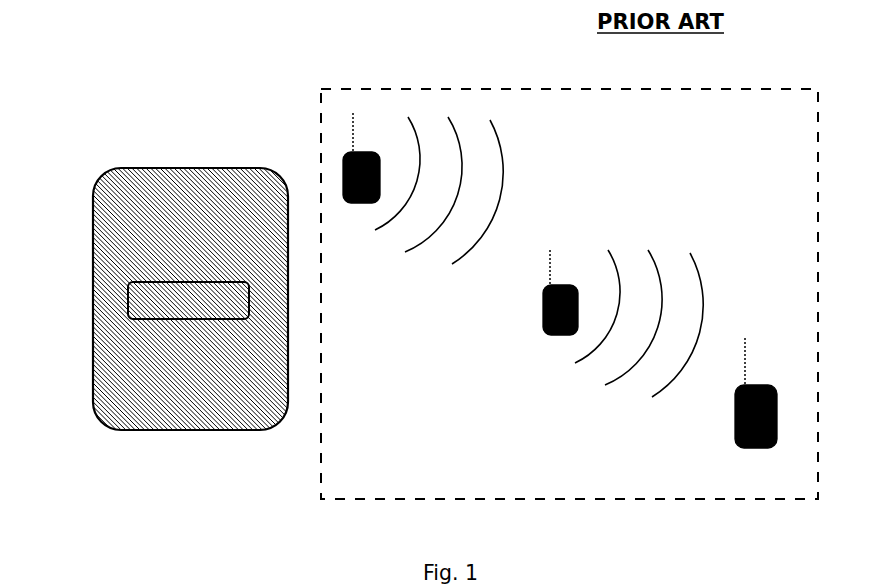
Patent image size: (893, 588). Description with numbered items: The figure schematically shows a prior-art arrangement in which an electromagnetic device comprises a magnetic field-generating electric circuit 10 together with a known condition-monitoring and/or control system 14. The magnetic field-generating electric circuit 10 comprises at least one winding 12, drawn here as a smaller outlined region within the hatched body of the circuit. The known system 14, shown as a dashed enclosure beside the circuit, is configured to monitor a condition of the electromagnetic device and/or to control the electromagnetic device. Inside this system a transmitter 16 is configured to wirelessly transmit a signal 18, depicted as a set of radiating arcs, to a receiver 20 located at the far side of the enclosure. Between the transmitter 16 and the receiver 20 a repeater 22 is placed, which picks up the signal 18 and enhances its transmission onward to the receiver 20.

The magnetic field-generating electric circuit 10 is at (96, 143).
The winding 12 is at (128, 298).
The condition-monitoring and/or control system 14 is at (372, 88).
The transmitter 16 is at (345, 167).
The signal 18 is at (532, 149).
The receiver 20 is at (777, 408).
The repeater 22 is at (544, 325).